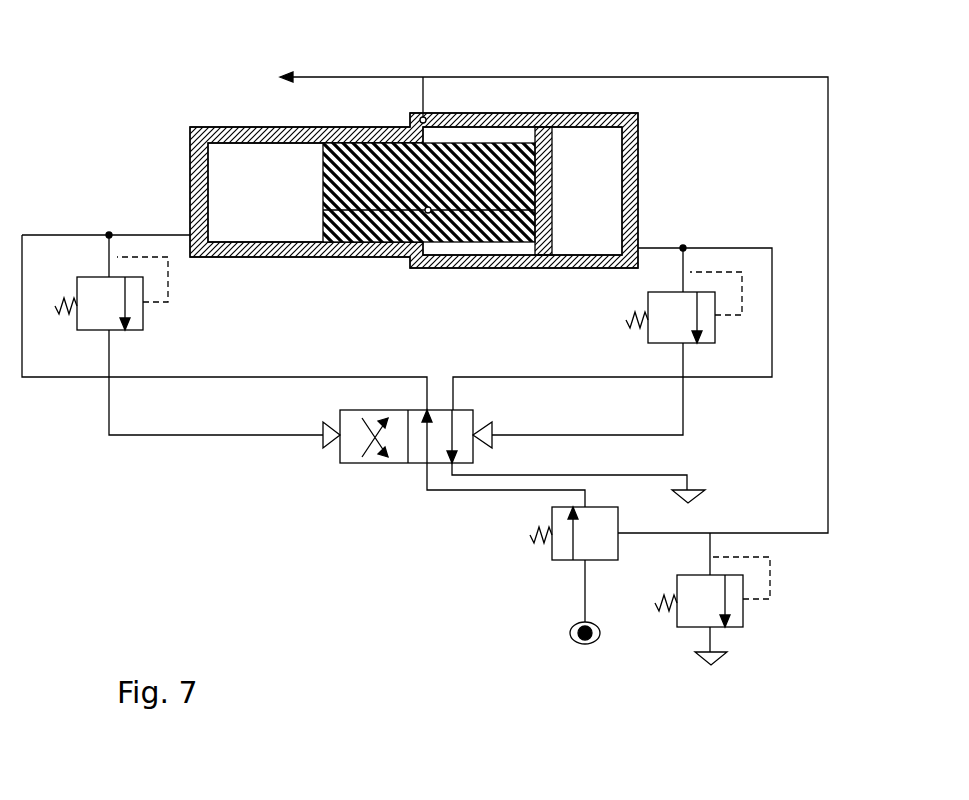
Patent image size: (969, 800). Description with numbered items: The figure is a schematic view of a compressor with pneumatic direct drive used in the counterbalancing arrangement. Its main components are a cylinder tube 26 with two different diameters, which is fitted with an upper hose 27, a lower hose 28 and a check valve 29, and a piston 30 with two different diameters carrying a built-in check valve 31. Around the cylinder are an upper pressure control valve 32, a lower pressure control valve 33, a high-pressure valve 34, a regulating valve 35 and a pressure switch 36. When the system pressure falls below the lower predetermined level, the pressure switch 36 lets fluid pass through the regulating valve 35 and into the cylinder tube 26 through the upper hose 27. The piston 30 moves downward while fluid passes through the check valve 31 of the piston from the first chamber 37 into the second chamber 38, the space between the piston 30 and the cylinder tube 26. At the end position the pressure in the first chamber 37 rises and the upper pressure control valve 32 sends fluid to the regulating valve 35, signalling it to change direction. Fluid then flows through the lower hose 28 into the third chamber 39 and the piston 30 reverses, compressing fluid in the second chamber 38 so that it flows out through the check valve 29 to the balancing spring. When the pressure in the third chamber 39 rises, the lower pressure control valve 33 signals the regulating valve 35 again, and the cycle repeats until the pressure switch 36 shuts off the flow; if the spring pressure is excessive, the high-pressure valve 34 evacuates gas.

The cylinder tube 26 is at (190, 190).
The upper hose 27 is at (147, 233).
The lower hose 28 is at (665, 248).
The check valve 29 is at (423, 117).
The piston 30 is at (500, 165).
The check valve 31 is at (428, 213).
The upper pressure control valve 32 is at (150, 312).
The lower pressure control valve 33 is at (608, 320).
The high-pressure valve 34 is at (753, 610).
The regulating valve 35 is at (398, 472).
The pressure switch 36 is at (548, 580).
The first chamber 37 is at (245, 153).
The second chamber 38 is at (470, 127).
The third chamber 39 is at (587, 167).